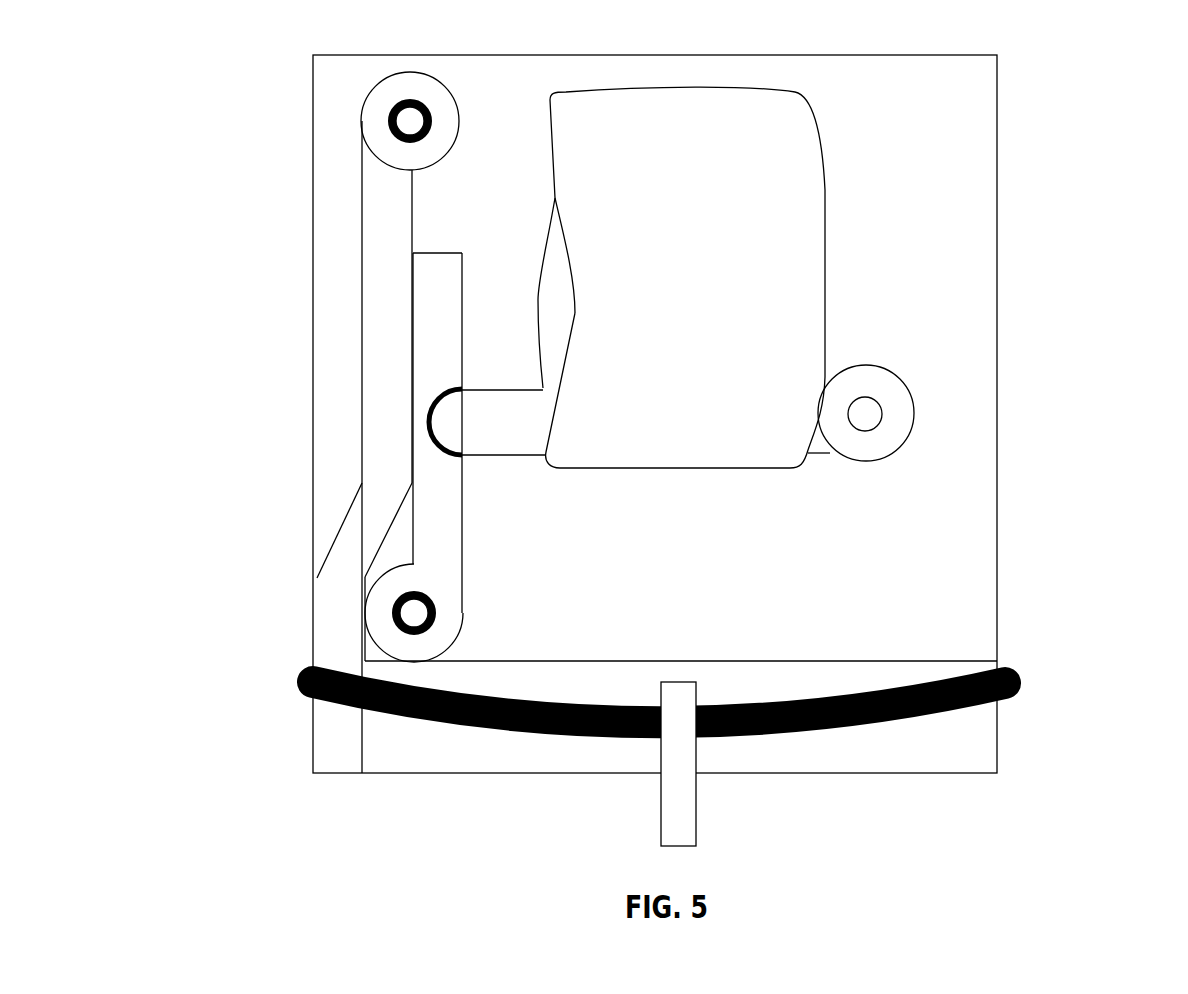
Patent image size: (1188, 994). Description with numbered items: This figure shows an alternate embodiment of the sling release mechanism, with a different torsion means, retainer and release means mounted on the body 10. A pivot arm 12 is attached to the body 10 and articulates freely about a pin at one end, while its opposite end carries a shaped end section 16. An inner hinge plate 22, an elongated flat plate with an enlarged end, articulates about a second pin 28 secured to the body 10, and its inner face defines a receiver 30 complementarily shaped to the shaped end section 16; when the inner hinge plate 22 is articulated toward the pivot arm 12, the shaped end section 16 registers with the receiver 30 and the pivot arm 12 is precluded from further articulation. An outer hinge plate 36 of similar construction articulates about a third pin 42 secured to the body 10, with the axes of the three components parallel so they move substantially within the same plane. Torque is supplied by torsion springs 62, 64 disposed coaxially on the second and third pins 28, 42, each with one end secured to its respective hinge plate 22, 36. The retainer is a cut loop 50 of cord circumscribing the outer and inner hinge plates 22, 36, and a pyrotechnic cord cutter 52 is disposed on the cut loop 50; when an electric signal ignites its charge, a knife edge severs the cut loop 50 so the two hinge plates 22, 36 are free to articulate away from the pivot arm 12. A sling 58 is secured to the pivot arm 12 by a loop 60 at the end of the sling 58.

The body 10 is at (910, 135).
The pivot arm 12 is at (842, 437).
The shaped end section 16 is at (450, 437).
The inner hinge plate 22 is at (437, 306).
The second pin 28 is at (413, 622).
The receiver 30 is at (430, 417).
The outer hinge plate 36 is at (375, 245).
The third pin 42 is at (410, 122).
The cut loop 50 is at (947, 712).
The pyrotechnic cord cutter 52 is at (680, 780).
The sling 58 is at (702, 147).
The loop 60 is at (562, 318).
The torsion spring 62 is at (395, 613).
The torsion spring 64 is at (388, 122).